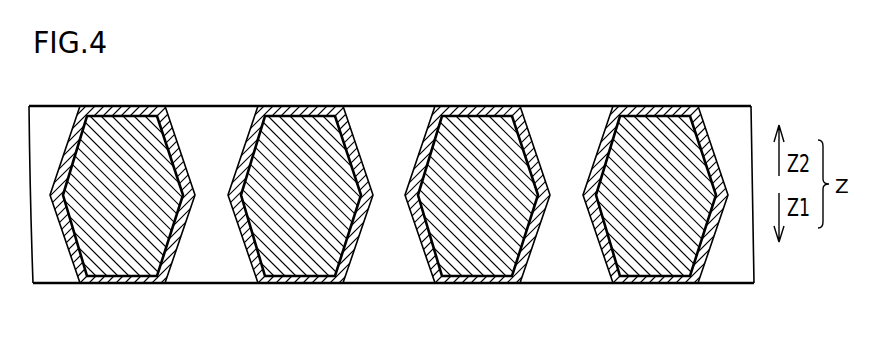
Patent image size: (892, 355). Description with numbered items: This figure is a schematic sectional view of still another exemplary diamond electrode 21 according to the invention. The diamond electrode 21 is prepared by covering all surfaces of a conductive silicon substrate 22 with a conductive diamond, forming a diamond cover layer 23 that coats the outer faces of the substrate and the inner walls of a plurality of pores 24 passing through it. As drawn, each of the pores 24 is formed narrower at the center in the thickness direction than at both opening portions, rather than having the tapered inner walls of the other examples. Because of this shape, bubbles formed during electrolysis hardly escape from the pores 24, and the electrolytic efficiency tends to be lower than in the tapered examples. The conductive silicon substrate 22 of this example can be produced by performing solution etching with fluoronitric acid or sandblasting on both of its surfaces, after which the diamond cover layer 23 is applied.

The diamond electrode 21 is at (446, 184).
The conductive silicon substrate 22 is at (682, 250).
The diamond cover layer 23 is at (656, 280).
The pores 24 is at (572, 126).